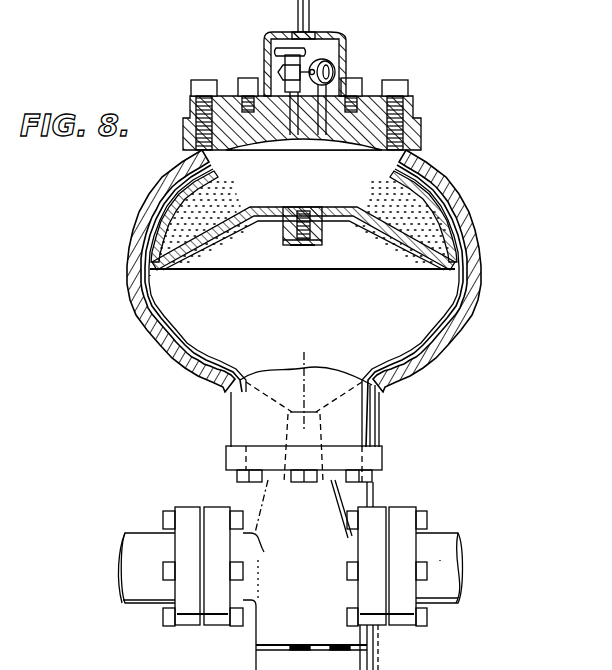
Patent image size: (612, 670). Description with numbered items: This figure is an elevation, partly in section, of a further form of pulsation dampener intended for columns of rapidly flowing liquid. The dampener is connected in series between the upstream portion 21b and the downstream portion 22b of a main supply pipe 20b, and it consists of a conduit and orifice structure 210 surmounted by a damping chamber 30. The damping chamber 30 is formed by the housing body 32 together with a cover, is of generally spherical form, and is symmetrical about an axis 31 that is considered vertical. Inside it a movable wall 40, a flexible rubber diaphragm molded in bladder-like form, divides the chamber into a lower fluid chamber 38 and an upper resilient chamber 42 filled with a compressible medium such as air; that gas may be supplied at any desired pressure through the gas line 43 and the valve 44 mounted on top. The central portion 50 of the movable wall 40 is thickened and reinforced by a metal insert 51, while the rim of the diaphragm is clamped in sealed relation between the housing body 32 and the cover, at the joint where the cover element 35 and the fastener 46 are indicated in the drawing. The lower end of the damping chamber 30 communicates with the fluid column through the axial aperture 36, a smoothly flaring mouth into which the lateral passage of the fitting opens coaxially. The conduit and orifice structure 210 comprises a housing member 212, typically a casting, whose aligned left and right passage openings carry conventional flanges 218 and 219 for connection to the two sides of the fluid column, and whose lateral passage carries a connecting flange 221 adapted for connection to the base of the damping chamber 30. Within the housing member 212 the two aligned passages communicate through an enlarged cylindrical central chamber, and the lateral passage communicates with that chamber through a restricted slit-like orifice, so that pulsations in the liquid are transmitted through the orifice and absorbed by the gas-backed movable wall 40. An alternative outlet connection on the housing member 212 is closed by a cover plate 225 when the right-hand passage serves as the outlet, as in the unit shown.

The damping chamber 30 is at (440, 318).
The housing body 32 is at (428, 350).
The top flange 35 is at (380, 96).
The flange bolts 46 is at (406, 128).
The valve 44 is at (285, 50).
The gas line 43 is at (302, 84).
The upper resilient chamber 42 is at (302, 230).
The metal insert 51 is at (326, 216).
The central portion 50 is at (318, 243).
The movable wall 40 is at (413, 266).
The lower fluid chamber 38 is at (246, 293).
The axis 31 is at (306, 356).
The axial aperture 36 is at (272, 380).
The connecting flange 221 is at (383, 462).
The conduit and orifice structure 210 is at (377, 492).
The housing member 212 is at (262, 503).
The flange 218 is at (222, 628).
The upstream portion 21b is at (138, 540).
The flange 219 is at (376, 628).
The downstream portion 22b is at (450, 540).
The main supply pipe 20b is at (470, 572).
The cover plate 225 is at (375, 664).